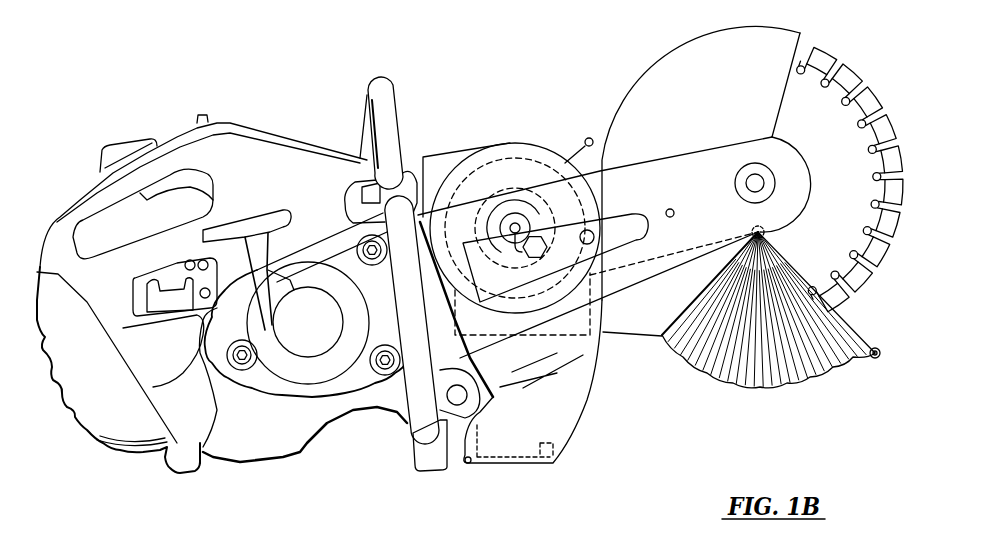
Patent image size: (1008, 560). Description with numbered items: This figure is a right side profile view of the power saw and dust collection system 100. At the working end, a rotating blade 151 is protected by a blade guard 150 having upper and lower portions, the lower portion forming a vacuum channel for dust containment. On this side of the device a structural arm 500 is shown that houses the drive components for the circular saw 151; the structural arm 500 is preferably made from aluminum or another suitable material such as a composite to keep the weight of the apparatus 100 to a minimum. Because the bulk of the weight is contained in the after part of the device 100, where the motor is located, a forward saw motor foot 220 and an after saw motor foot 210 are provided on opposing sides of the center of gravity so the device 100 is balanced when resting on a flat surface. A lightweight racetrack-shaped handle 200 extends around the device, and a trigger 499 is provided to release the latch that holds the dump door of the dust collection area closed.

The power saw and dust collection system 100 is at (450, 92).
The blade guard 150 is at (697, 57).
The rotating blade 151 is at (815, 64).
The handle 200 is at (367, 97).
The after saw motor foot 210 is at (166, 462).
The forward saw motor foot 220 is at (437, 467).
The trigger 499 is at (585, 140).
The structural arm 500 is at (645, 282).